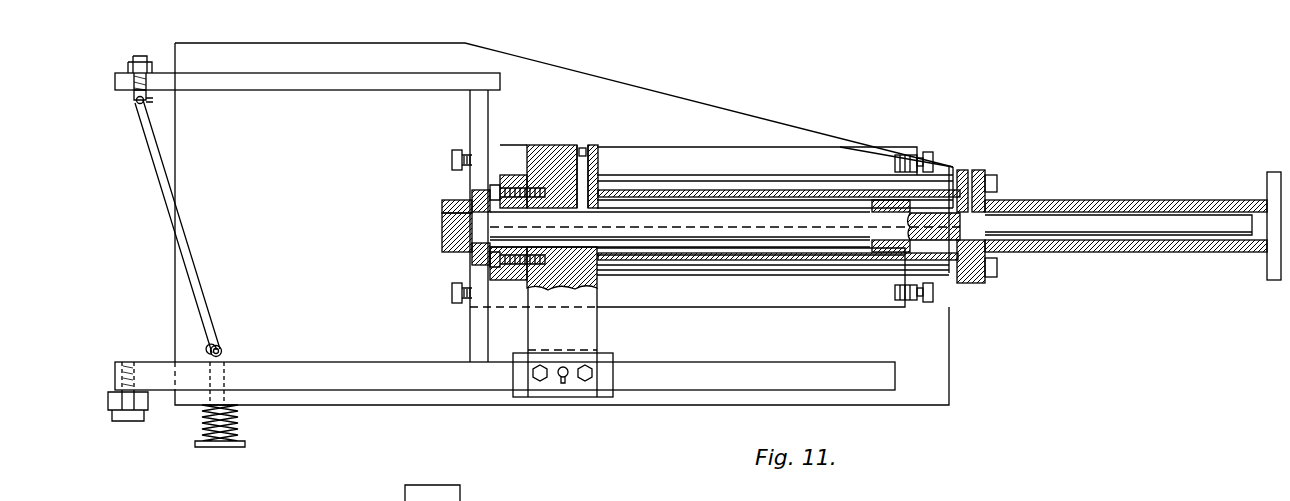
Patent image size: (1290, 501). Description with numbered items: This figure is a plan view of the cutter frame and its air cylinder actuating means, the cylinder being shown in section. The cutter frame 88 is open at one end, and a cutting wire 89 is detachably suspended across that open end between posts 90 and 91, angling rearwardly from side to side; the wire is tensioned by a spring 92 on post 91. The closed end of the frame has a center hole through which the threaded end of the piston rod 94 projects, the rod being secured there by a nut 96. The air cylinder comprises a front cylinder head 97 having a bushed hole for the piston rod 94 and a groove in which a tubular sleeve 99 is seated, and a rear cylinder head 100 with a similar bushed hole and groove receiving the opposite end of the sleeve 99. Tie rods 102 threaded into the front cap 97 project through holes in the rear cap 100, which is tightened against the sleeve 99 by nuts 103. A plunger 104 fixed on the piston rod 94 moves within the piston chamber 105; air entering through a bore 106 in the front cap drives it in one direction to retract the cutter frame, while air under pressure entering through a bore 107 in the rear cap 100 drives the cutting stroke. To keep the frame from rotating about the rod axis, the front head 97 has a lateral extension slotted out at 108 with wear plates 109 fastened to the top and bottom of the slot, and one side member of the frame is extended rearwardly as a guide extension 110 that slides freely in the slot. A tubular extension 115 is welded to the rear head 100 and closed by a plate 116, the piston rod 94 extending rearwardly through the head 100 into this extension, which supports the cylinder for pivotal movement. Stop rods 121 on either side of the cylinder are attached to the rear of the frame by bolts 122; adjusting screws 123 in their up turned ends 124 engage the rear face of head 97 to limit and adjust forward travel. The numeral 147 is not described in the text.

The cutter frame 88 is at (278, 91).
The cutting wire 89 is at (190, 246).
The post 90 is at (136, 98).
The post 91 is at (225, 356).
The spring 92 is at (240, 427).
The piston rod 94 is at (442, 228).
The nut 96 is at (445, 204).
The front cylinder head 97 is at (563, 136).
The tubular sleeve 99 is at (663, 189).
The rear cylinder head 100 is at (985, 172).
The tie rods 102 is at (820, 178).
The nuts 103 is at (998, 183).
The plunger 104 is at (888, 246).
The piston chamber 105 is at (776, 242).
The bore 106 is at (612, 136).
The bore 107 is at (978, 150).
The slot 108 is at (586, 348).
The wear plates 109 is at (612, 356).
The guide extension 110 is at (776, 362).
The tubular extension 115 is at (1175, 190).
The plate 116 is at (1270, 185).
The stop rods 121 is at (735, 156).
The bolts 122 is at (452, 160).
The adjusting screws 123 is at (929, 160).
The up turned ends 124 is at (906, 155).
The anchor bolt 147 is at (140, 405).